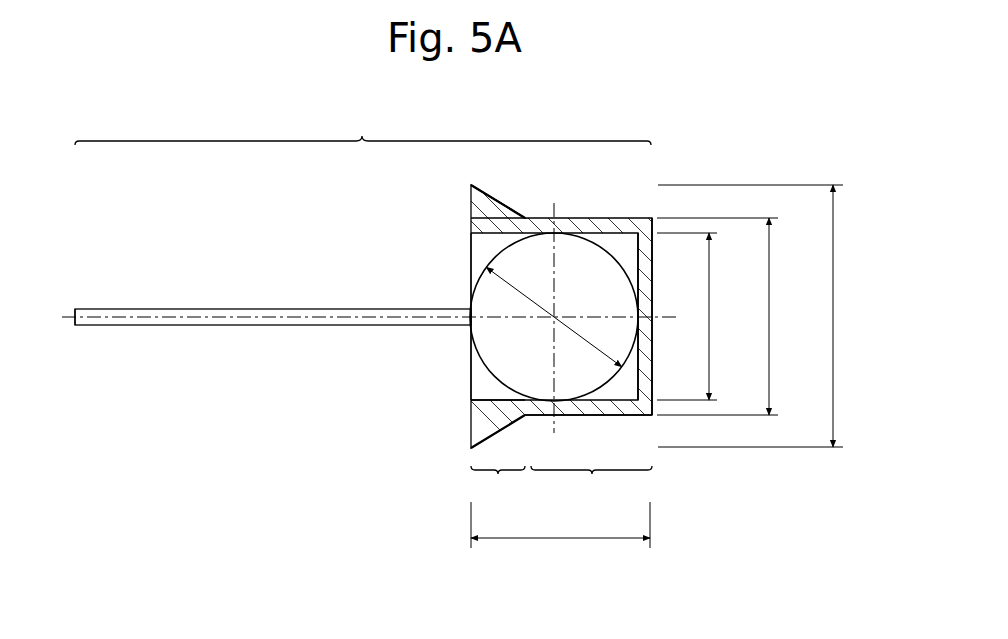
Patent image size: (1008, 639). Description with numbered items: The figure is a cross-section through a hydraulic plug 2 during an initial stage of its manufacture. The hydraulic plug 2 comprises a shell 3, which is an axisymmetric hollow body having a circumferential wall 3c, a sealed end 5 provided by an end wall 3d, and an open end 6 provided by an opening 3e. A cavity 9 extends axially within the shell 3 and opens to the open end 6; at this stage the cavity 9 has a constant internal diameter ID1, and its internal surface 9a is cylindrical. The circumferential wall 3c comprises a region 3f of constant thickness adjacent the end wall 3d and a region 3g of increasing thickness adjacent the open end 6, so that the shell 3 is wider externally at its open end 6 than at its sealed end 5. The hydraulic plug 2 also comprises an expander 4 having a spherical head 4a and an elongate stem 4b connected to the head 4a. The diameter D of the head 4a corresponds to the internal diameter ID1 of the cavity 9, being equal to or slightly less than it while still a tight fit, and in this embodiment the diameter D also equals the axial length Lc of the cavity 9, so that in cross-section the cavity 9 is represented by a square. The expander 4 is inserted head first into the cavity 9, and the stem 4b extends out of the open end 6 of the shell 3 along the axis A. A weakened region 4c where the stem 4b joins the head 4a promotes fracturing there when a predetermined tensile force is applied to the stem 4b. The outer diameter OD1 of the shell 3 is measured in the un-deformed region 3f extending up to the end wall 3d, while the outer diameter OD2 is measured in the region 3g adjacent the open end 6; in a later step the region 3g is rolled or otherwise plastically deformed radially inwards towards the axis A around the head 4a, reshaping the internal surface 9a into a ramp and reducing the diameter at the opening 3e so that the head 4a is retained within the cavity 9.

The hydraulic plug 2 is at (363, 129).
The shell 3 is at (537, 218).
The circumferential wall 3c is at (585, 405).
The end wall 3d is at (670, 316).
The opening 3e is at (471, 232).
The region of constant thickness 3f is at (591, 488).
The region of increasing thickness 3g is at (498, 488).
The expander 4 is at (258, 325).
The spherical head 4a is at (590, 262).
The elongate stem 4b is at (137, 325).
The weakened region 4c is at (470, 325).
The sealed end 5 is at (679, 287).
The open end 6 is at (468, 193).
The cavity 9 is at (481, 250).
The internal surface of the cavity 9a is at (490, 398).
The axis A is at (220, 318).
The diameter of the head D is at (645, 367).
The internal diameter ID1 is at (702, 316).
The outer diameter in un-deformed region OD1 is at (738, 316).
The outer diameter in deformed region OD2 is at (770, 316).
The axial length of the cavity Lc is at (560, 537).